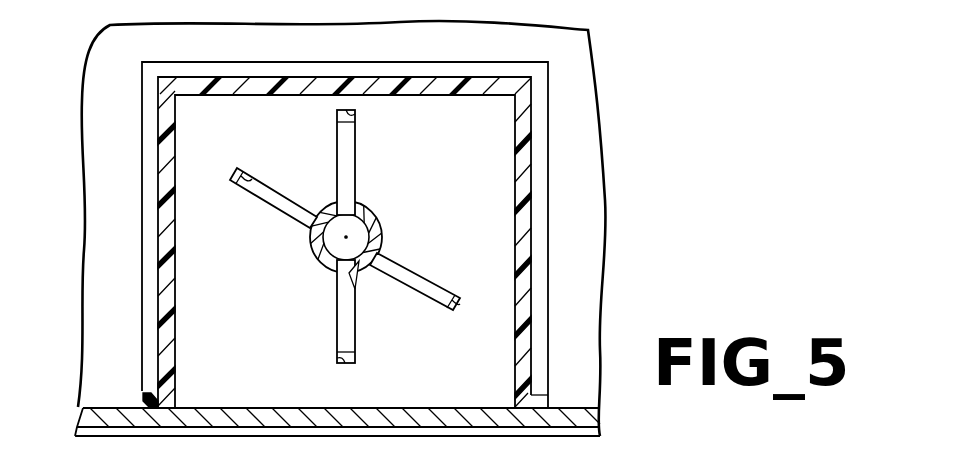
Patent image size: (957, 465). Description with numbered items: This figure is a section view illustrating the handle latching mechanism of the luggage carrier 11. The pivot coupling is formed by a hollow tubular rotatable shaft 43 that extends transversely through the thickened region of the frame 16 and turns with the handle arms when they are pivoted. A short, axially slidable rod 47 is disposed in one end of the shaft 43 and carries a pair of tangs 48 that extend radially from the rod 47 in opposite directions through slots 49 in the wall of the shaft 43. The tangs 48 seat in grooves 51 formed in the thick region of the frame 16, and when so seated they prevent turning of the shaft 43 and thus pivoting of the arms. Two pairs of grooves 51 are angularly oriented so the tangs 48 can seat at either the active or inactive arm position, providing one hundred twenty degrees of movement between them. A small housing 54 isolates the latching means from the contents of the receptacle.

The housing assembly 11 is at (641, 120).
The frame 16 is at (423, 407).
The rotatable shaft 43 is at (378, 222).
The axially slidable rod 47 is at (340, 236).
The tangs 48 is at (345, 170).
The slots 49 is at (353, 276).
The grooves 51 is at (247, 178).
The housing 54 is at (531, 219).